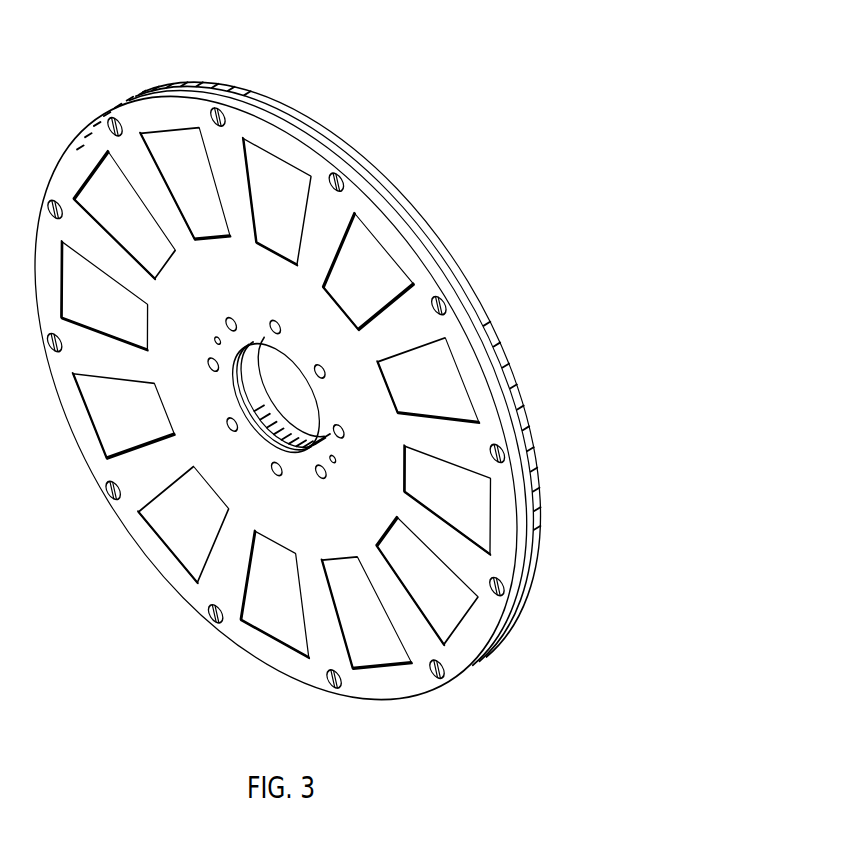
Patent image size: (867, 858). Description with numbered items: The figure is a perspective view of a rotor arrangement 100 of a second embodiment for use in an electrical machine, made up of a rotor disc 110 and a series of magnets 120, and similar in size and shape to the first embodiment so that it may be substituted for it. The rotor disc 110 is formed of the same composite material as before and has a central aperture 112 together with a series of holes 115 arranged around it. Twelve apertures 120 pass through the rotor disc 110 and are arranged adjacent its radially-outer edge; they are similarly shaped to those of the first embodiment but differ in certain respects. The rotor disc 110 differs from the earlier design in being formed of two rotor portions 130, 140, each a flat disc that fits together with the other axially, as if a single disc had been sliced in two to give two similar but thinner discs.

The rotor arrangement 100 is at (434, 61).
The rotor disc 110 is at (392, 187).
The central aperture 112 is at (234, 407).
The holes 115 is at (275, 474).
The apertures 120 is at (272, 158).
The rotor portion 130 is at (502, 357).
The rotor portion 140 is at (496, 398).